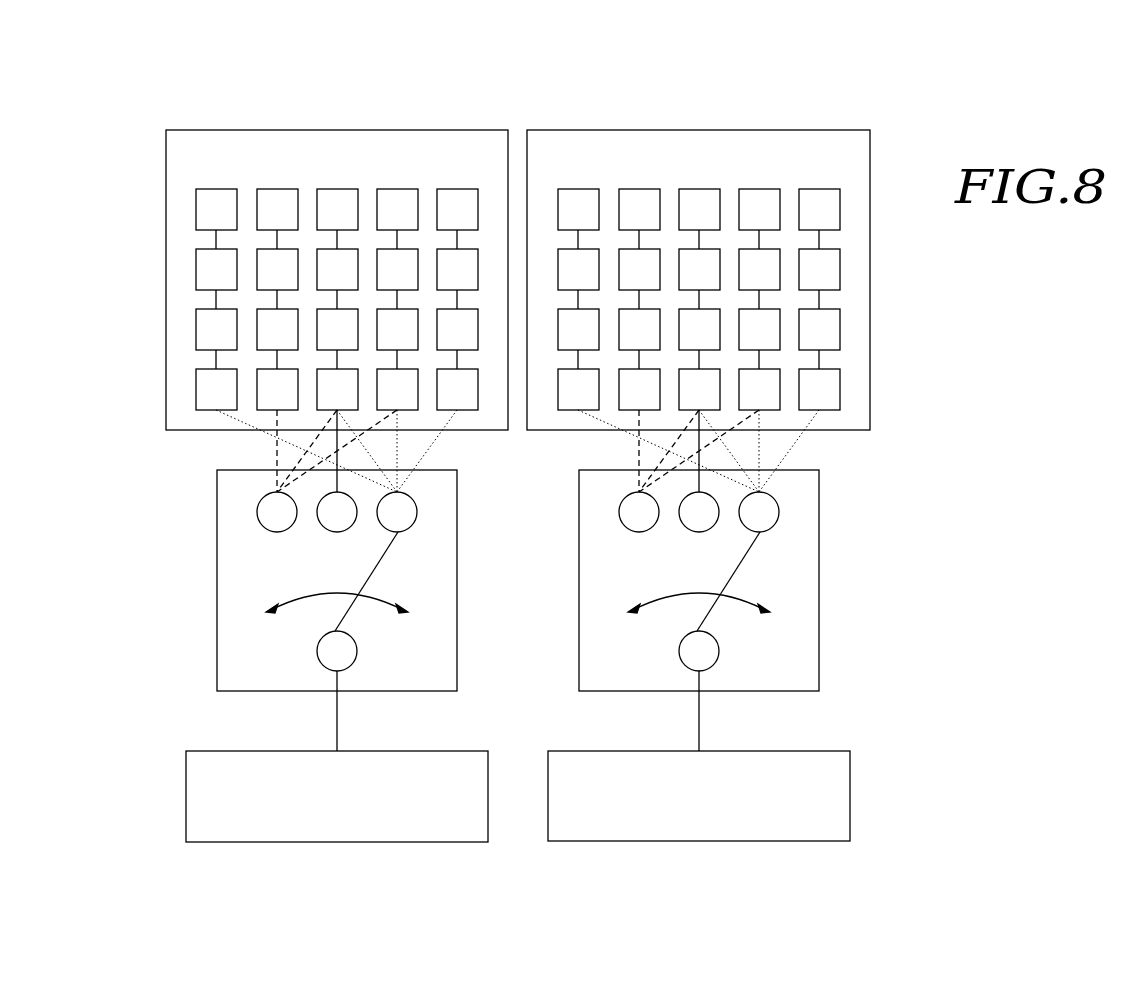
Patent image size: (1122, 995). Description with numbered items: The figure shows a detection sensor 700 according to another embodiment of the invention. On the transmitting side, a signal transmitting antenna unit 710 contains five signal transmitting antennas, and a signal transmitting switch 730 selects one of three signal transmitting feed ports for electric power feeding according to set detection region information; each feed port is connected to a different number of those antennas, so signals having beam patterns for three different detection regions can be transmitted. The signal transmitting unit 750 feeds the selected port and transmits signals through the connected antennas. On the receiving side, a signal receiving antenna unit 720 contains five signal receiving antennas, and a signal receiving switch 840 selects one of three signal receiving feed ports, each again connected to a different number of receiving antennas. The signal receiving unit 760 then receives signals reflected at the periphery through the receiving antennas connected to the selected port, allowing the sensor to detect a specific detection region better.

The detection sensor 700 is at (122, 110).
The signal transmitting antenna unit 710 is at (166, 233).
The signal receiving antenna unit 720 is at (870, 272).
The signal transmitting switch 730 is at (217, 581).
The signal receiving switch 840 is at (819, 583).
The signal transmitting unit 750 is at (186, 799).
The signal receiving unit 760 is at (850, 801).